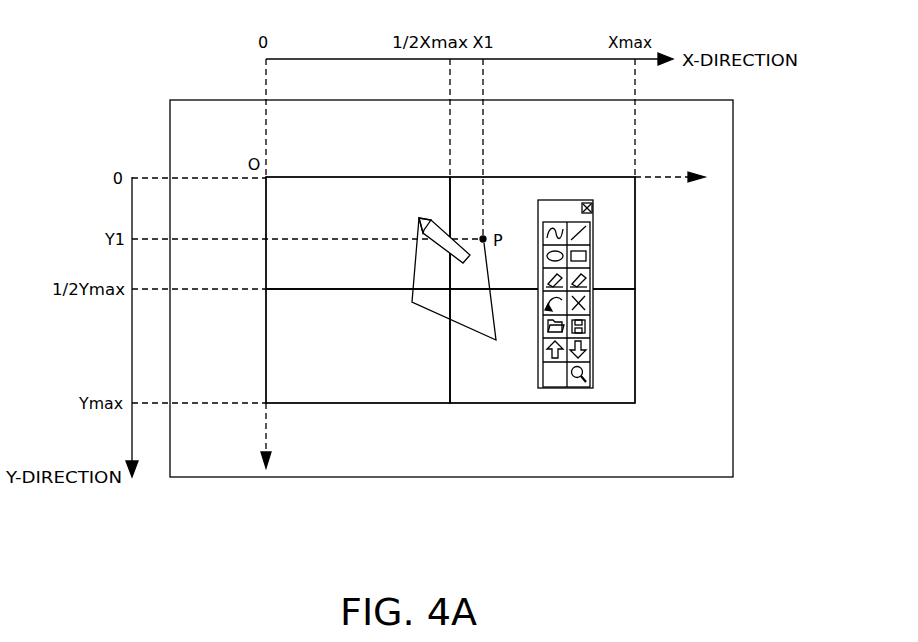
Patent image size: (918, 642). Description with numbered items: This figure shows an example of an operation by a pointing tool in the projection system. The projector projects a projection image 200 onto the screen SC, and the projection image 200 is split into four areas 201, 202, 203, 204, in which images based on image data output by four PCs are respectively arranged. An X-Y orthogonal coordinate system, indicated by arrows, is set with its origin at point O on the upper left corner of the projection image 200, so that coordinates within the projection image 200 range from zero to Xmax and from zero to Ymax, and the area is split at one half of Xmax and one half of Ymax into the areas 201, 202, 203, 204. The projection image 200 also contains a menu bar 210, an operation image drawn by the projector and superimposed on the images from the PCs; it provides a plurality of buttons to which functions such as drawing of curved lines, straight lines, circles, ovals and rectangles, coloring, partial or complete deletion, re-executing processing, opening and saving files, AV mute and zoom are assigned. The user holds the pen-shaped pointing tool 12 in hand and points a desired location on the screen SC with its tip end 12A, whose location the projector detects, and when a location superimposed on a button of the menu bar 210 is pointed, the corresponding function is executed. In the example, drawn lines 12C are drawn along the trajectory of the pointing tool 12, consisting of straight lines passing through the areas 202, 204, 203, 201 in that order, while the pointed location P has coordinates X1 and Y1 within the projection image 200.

The screen SC is at (733, 126).
The projection image 200 is at (575, 177).
The area 201 is at (336, 200).
The area 202 is at (614, 238).
The area 203 is at (319, 393).
The area 204 is at (583, 390).
The menu bar 210 is at (593, 349).
The pointing tool 12 is at (456, 259).
The tip end 12A is at (416, 238).
The drawn figure 12C is at (433, 313).